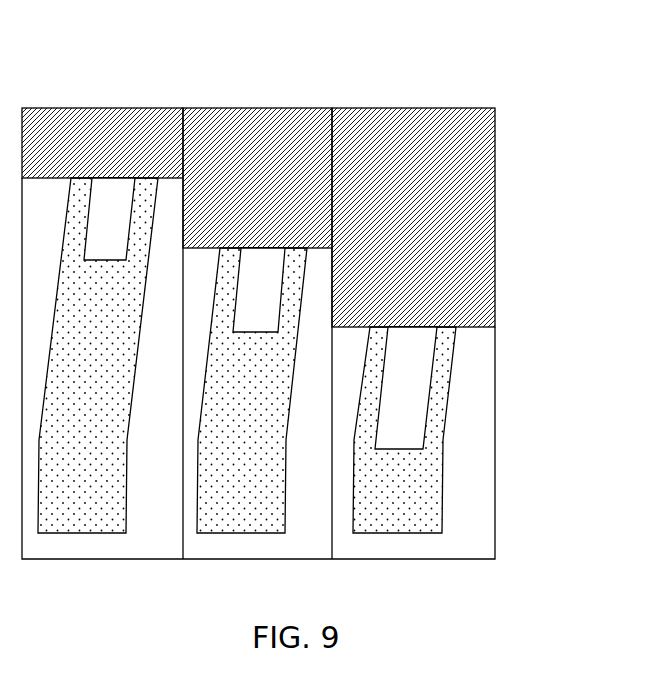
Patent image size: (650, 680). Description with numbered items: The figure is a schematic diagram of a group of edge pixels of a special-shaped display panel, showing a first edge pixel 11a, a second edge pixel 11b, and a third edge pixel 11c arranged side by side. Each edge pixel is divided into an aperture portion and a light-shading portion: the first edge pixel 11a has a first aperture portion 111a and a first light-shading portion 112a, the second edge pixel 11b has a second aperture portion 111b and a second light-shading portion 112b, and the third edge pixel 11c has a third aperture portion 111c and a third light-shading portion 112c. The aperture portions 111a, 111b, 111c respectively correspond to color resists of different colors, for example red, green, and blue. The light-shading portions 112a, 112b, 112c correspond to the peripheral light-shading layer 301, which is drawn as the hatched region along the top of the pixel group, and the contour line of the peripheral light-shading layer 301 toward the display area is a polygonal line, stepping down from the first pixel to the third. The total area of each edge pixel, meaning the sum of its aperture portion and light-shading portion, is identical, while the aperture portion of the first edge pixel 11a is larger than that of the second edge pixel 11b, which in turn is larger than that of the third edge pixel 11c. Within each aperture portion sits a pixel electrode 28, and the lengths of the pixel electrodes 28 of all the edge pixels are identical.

The first edge pixel 11a is at (76, 43).
The second edge pixel 11b is at (246, 43).
The third edge pixel 11c is at (414, 43).
The first aperture portion 111a is at (93, 287).
The second aperture portion 111b is at (253, 362).
The third aperture portion 111c is at (400, 427).
The first light-shading portion 112a is at (67, 153).
The second light-shading portion 112b is at (240, 153).
The third light-shading portion 112c is at (397, 153).
The peripheral light-shading layer 301 is at (299, 193).
The pixel electrode 28 is at (423, 495).